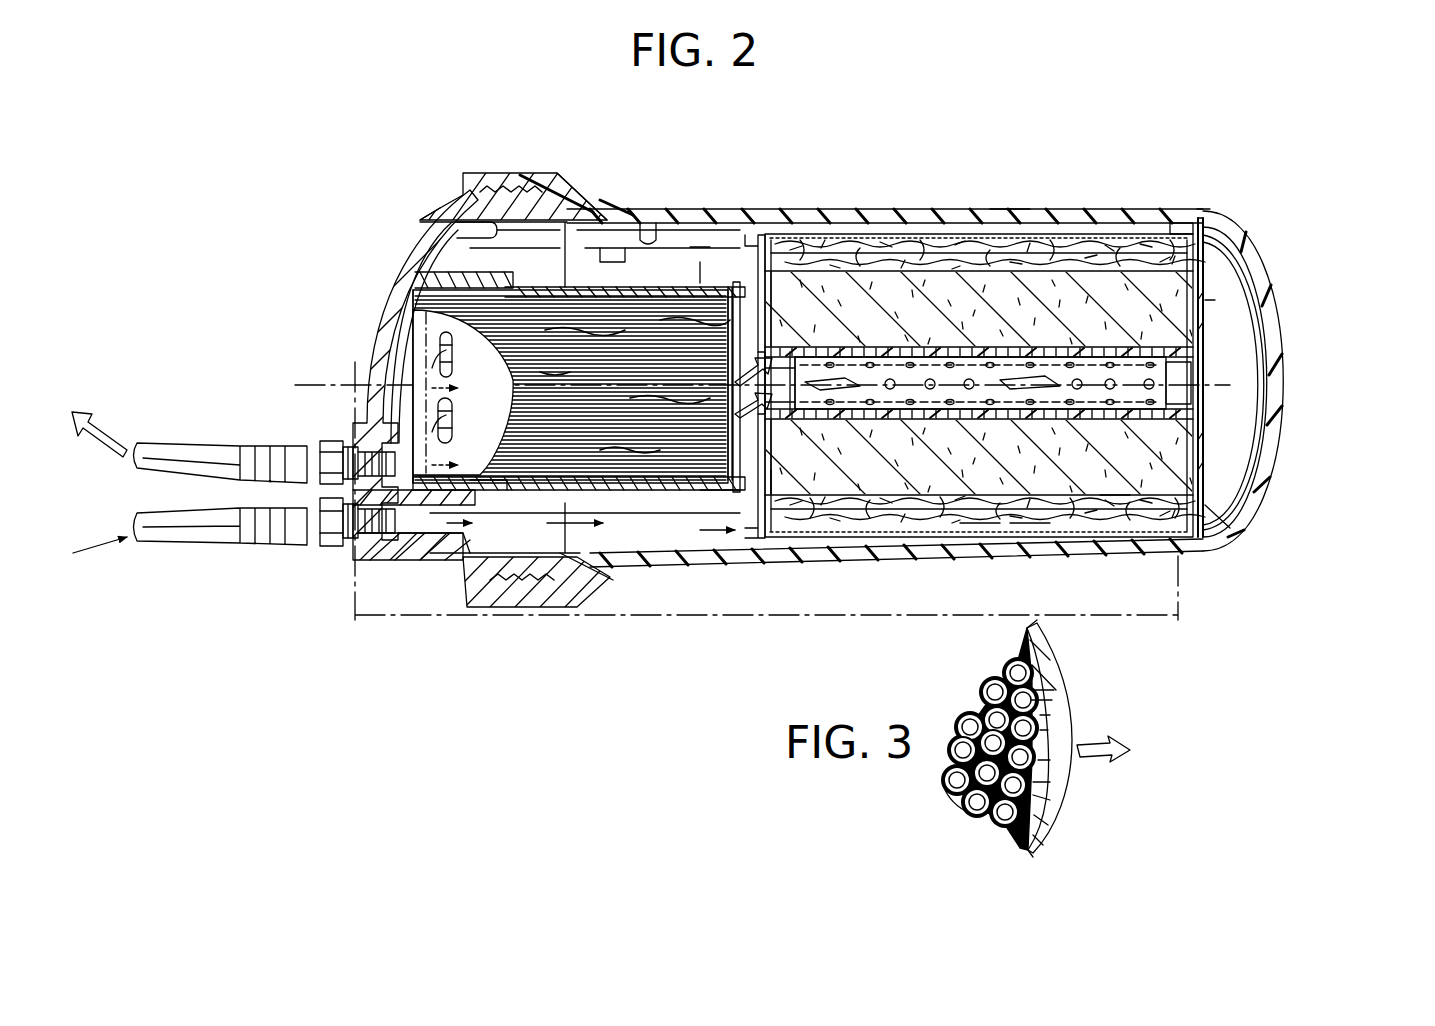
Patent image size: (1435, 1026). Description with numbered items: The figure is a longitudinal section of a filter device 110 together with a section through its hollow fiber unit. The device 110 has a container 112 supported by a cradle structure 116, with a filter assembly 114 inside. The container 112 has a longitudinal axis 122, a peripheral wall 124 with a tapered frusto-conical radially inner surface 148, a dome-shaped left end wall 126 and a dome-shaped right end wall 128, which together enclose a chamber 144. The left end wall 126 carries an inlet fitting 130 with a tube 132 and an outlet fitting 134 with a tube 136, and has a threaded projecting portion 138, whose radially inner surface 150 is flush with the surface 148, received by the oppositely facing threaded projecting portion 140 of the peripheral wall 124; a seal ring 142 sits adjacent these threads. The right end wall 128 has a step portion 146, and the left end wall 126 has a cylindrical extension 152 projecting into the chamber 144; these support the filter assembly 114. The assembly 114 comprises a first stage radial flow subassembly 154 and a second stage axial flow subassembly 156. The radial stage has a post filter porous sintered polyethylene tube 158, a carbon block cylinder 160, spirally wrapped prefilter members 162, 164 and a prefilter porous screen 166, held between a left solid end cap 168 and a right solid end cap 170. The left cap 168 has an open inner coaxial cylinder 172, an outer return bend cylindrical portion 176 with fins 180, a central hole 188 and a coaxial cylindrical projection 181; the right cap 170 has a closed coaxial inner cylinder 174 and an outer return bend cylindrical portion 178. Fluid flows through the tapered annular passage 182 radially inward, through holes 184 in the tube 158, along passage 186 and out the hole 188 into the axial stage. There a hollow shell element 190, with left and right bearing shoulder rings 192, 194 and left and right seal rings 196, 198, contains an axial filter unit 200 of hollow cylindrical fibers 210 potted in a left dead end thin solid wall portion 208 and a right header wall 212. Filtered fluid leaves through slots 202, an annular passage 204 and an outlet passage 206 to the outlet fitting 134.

In FIG. 2, the filter device 110 is at (1140, 116).
In FIG. 2, the container 112 is at (714, 202).
In FIG. 2, the filter assembly 114 is at (1222, 311).
In FIG. 2, the cradle structure 116 is at (690, 617).
In FIG. 2, the longitudinal axis 122 is at (1232, 385).
In FIG. 2, the peripheral wall 124 is at (1003, 217).
In FIG. 2, the left end wall 126 is at (372, 312).
In FIG. 2, the right end wall 128 is at (1268, 463).
In FIG. 2, the inlet fitting 130 is at (317, 550).
In FIG. 2, the tube 132 is at (160, 547).
In FIG. 2, the outlet fitting 134 is at (310, 443).
In FIG. 2, the tube 136 is at (165, 443).
In FIG. 2, the threaded projecting portion 138 is at (440, 208).
In FIG. 2, the threaded projecting portion 140 is at (490, 175).
In FIG. 2, the seal ring 142 is at (590, 217).
In FIG. 2, the chamber 144 is at (558, 556).
In FIG. 2, the step portion 146 is at (1218, 515).
In FIG. 2, the radially inner surface 148 is at (657, 233).
In FIG. 2, the radially inner surface 150 is at (450, 233).
In FIG. 2, the cylindrical extension 152 is at (455, 247).
In FIG. 2, the first stage radial flow subassembly 154 is at (888, 272).
In FIG. 2, the second stage axial flow subassembly 156 is at (608, 278).
In FIG. 2, the post filter porous sintered polyethylene tube 158 is at (1196, 440).
In FIG. 2, the carbon block cylinder 160 is at (1204, 466).
In FIG. 2, the prefilter member 162 is at (965, 525).
In FIG. 2, the prefilter member 164 is at (1023, 533).
In FIG. 2, the prefilter porous screen 166 is at (1112, 478).
In FIG. 2, the left solid end cap 168 is at (758, 240).
In FIG. 2, the right solid end cap 170 is at (1204, 265).
In FIG. 2, the open inner coaxial cylinder 172 is at (797, 309).
In FIG. 2, the closed coaxial inner cylinder 174 is at (1196, 369).
In FIG. 2, the outer return bend cylindrical portion 176 is at (787, 240).
In FIG. 2, the outer return bend cylindrical portion 178 is at (1182, 227).
In FIG. 2, the fins 180 is at (801, 240).
In FIG. 2, the coaxial cylindrical projection 181 is at (707, 505).
In FIG. 2, the annular passage 182 is at (1041, 233).
In FIG. 2, the holes 184 is at (965, 406).
In FIG. 2, the passage 186 is at (965, 309).
In FIG. 2, the central hole 188 is at (805, 457).
In FIG. 2, the hollow shell element 190 is at (604, 442).
In FIG. 3, the hollow shell element 190 is at (1060, 667).
In FIG. 2, the left bearing shoulder ring 192 is at (493, 254).
In FIG. 2, the right bearing shoulder ring 194 is at (717, 283).
In FIG. 2, the left seal ring 196 is at (585, 533).
In FIG. 2, the right seal ring 198 is at (745, 235).
In FIG. 2, the axial filter unit 200 is at (571, 404).
In FIG. 2, the slots 202 is at (453, 425).
In FIG. 3, the slots 202 is at (1050, 763).
In FIG. 2, the annular passage 204 is at (440, 276).
In FIG. 2, the outlet passage 206 is at (398, 328).
In FIG. 2, the left dead end thin solid wall portion 208 is at (413, 347).
In FIG. 3, the hollow cylindrical fibers 210 is at (993, 827).
In FIG. 2, the header wall 212 is at (748, 500).
In FIG. 3, the header wall 212 is at (937, 782).